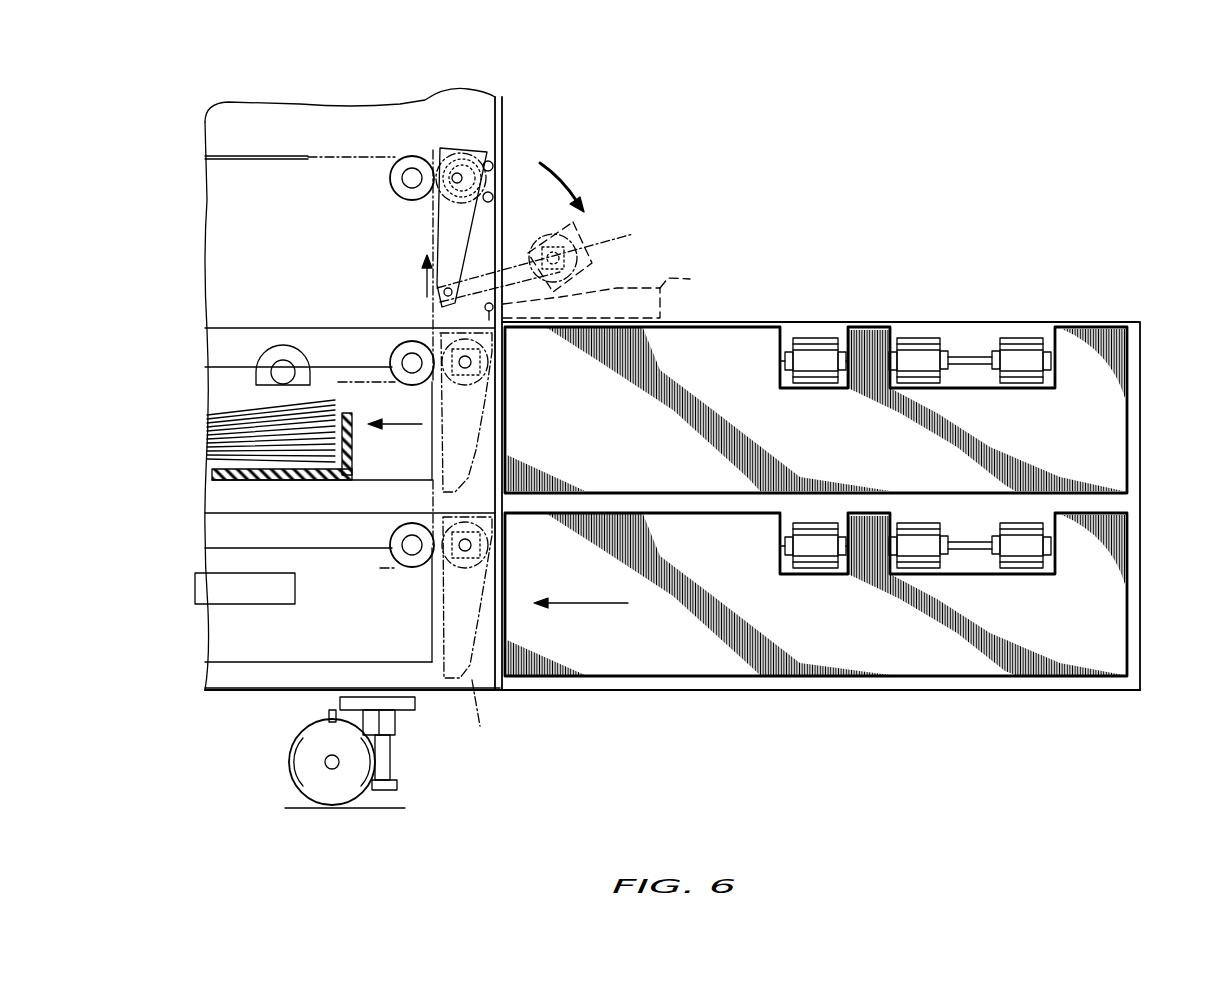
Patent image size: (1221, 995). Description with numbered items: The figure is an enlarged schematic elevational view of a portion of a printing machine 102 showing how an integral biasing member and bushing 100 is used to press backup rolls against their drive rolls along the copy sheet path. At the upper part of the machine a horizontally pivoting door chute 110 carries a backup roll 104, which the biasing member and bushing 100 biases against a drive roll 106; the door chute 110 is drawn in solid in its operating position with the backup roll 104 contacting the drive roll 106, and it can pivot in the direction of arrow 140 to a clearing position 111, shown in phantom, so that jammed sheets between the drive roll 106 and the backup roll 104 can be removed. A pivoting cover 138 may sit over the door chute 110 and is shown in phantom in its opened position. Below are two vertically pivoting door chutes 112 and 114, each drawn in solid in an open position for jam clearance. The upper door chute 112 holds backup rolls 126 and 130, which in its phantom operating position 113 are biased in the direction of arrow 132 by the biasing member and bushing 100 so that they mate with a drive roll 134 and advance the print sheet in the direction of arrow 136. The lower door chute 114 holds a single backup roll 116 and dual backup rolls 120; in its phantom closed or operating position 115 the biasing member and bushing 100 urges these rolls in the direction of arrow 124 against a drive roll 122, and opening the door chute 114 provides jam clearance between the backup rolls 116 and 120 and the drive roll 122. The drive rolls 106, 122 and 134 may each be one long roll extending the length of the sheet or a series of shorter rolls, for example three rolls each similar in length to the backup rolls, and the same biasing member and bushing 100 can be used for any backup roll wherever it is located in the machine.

The integral biasing member and bushing 100 is at (492, 362).
The printing machine 102 is at (283, 86).
The backup roll 104 is at (465, 153).
The drive roll 106 is at (398, 196).
The horizontally pivoting door chute 110 is at (453, 218).
The clearing position 111 is at (554, 262).
The vertically pivoting door chute 112 is at (1127, 402).
The operating position 113 is at (486, 447).
The vertically pivoting door chute 114 is at (1127, 613).
The closed or operating position 115 is at (467, 633).
The single backup roll 116 is at (822, 558).
The dual backup rolls 120 is at (1050, 577).
The drive roll 122 is at (415, 568).
The arrow 124 is at (588, 606).
The backup roll 126 is at (822, 343).
The backup rolls 130 is at (1050, 328).
The arrow 132 is at (403, 428).
The drive roll 134 is at (415, 386).
The arrow 136 is at (422, 288).
The pivoting cover 138 is at (600, 298).
The arrow 140 is at (541, 163).